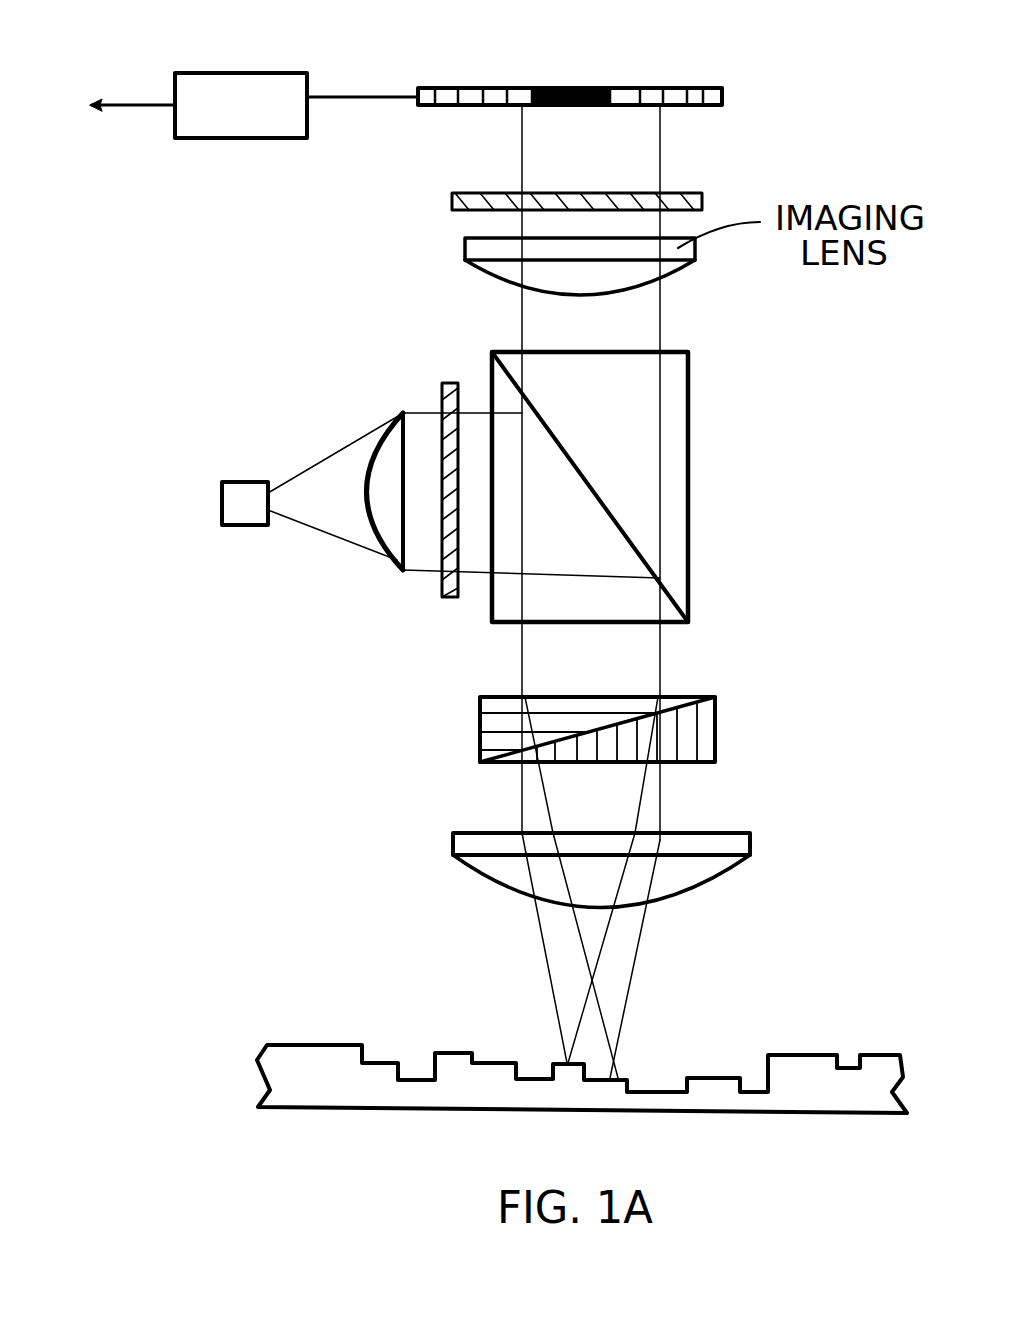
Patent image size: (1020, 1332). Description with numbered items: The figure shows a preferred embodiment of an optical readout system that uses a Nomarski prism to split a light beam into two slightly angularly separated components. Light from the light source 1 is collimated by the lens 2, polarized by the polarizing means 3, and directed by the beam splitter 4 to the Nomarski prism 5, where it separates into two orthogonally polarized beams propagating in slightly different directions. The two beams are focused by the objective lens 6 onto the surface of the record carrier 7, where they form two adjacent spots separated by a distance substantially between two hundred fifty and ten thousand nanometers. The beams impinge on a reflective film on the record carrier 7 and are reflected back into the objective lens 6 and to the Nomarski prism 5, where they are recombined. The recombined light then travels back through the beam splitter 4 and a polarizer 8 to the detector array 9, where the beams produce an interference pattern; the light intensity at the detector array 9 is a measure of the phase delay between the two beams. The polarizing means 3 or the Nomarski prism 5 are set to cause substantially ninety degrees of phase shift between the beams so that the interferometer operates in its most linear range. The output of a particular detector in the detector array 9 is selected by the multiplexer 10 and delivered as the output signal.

The light source 1 is at (245, 500).
The collimating lens 2 is at (393, 547).
The polarizing means 3 is at (450, 383).
The beam splitter 4 is at (668, 460).
The Nomarski prism 5 is at (702, 735).
The objective lens 6 is at (738, 848).
The record carrier 7 is at (795, 1072).
The polarizer 8 is at (682, 203).
The detector array 9 is at (612, 95).
The multiplexer 10 is at (237, 125).